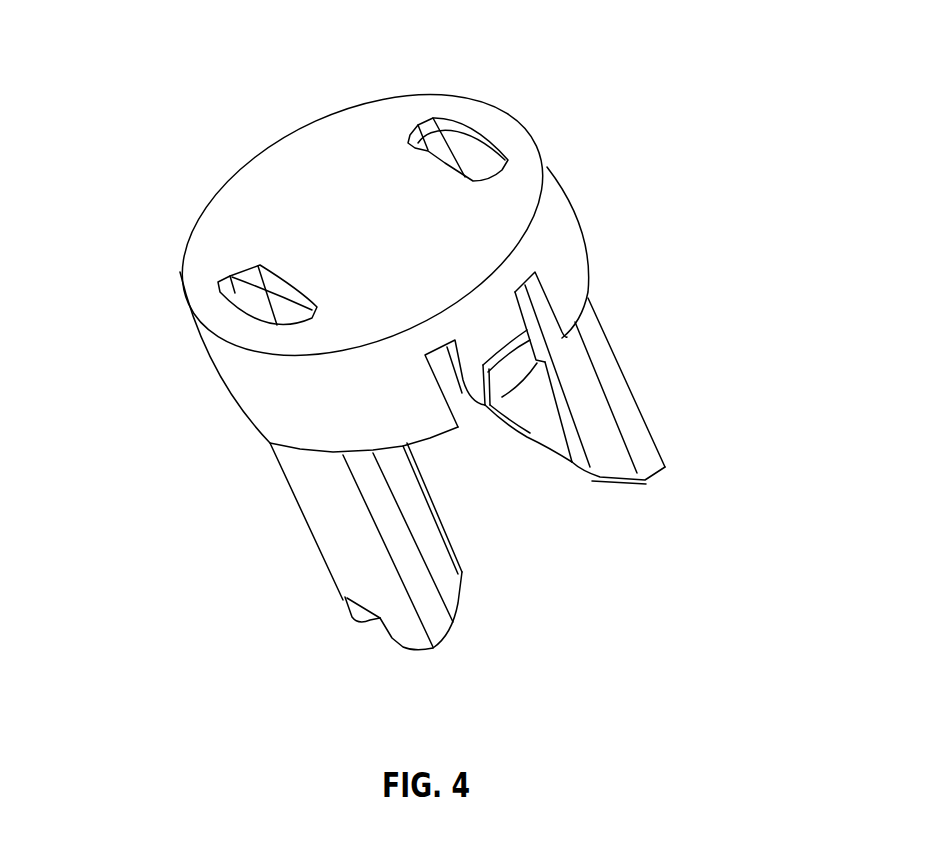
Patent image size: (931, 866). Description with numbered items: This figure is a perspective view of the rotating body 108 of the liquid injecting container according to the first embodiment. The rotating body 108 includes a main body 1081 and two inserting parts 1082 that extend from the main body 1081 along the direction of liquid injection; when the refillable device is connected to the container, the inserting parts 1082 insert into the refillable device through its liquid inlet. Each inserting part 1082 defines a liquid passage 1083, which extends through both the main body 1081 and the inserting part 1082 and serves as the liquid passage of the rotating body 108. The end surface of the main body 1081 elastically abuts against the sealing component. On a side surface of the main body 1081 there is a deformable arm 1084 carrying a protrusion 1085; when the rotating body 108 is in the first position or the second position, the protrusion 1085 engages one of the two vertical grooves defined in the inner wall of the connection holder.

The rotating body 108 is at (582, 222).
The main body 1081 is at (355, 135).
The inserting part 1082 is at (595, 400).
The liquid passage 1083 is at (467, 147).
The deformable arm 1084 is at (498, 322).
The protrusion 1085 is at (512, 372).